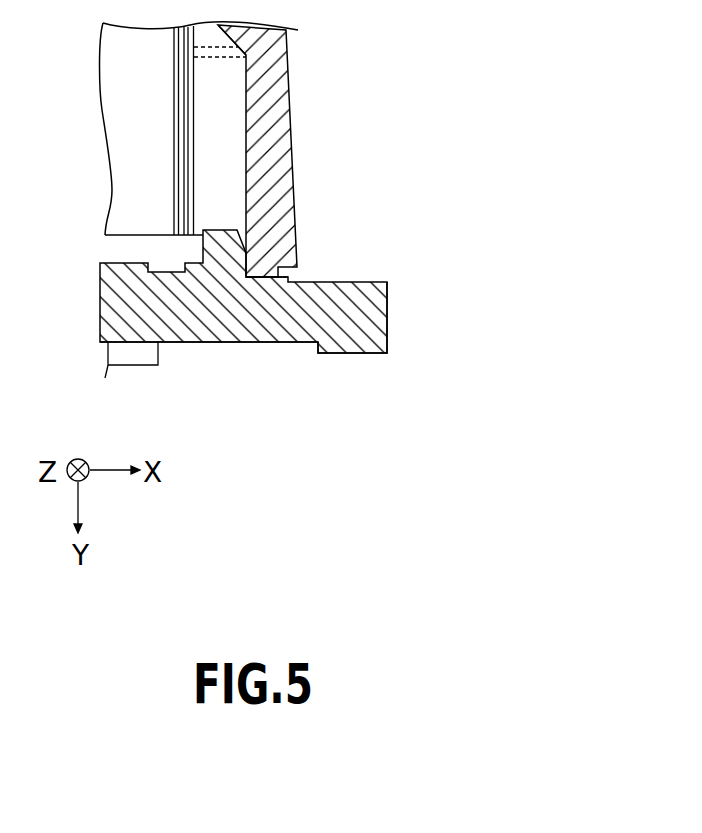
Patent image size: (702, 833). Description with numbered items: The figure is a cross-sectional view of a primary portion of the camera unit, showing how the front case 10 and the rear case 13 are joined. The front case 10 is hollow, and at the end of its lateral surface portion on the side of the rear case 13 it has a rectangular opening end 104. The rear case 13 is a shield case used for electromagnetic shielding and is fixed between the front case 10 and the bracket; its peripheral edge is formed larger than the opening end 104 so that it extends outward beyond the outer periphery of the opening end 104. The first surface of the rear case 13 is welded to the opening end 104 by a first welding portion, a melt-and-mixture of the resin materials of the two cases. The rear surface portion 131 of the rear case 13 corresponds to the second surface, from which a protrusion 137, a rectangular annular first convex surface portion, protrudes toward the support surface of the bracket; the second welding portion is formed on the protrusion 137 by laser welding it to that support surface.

The front case 10 is at (272, 150).
The rear case 13 is at (338, 387).
The rear surface portion 131 is at (178, 342).
The protrusion 137 is at (350, 353).
The opening end 104 is at (268, 278).